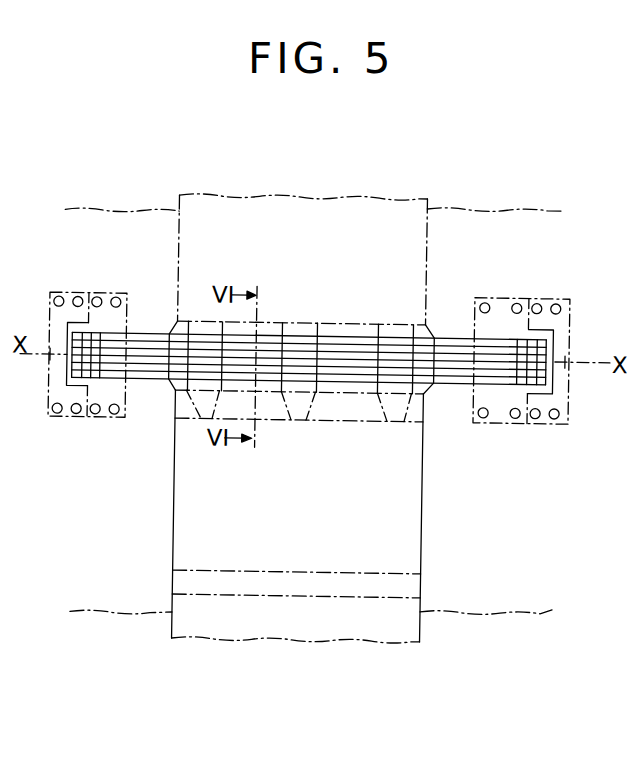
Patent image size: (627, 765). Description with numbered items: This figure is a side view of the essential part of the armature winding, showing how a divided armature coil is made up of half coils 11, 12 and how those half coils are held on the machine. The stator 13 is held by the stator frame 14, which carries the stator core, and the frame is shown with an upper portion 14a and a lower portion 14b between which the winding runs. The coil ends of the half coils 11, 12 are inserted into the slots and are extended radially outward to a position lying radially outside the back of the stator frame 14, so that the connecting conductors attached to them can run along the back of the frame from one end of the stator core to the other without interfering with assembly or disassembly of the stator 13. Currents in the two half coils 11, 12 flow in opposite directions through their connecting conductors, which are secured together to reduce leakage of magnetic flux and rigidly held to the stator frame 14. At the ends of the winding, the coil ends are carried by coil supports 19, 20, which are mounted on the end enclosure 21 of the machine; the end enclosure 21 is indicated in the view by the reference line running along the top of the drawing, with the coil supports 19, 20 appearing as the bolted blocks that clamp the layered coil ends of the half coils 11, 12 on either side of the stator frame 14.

The half coil 11 is at (157, 382).
The half coil 12 is at (102, 356).
The stator 13 is at (358, 260).
The stator frame 14 is at (297, 197).
The upper portion of support member 14a is at (398, 196).
The lower portion of support member 14b is at (419, 621).
The coil support 19 is at (66, 297).
The coil support 20 is at (103, 296).
The end enclosure 21 is at (85, 219).